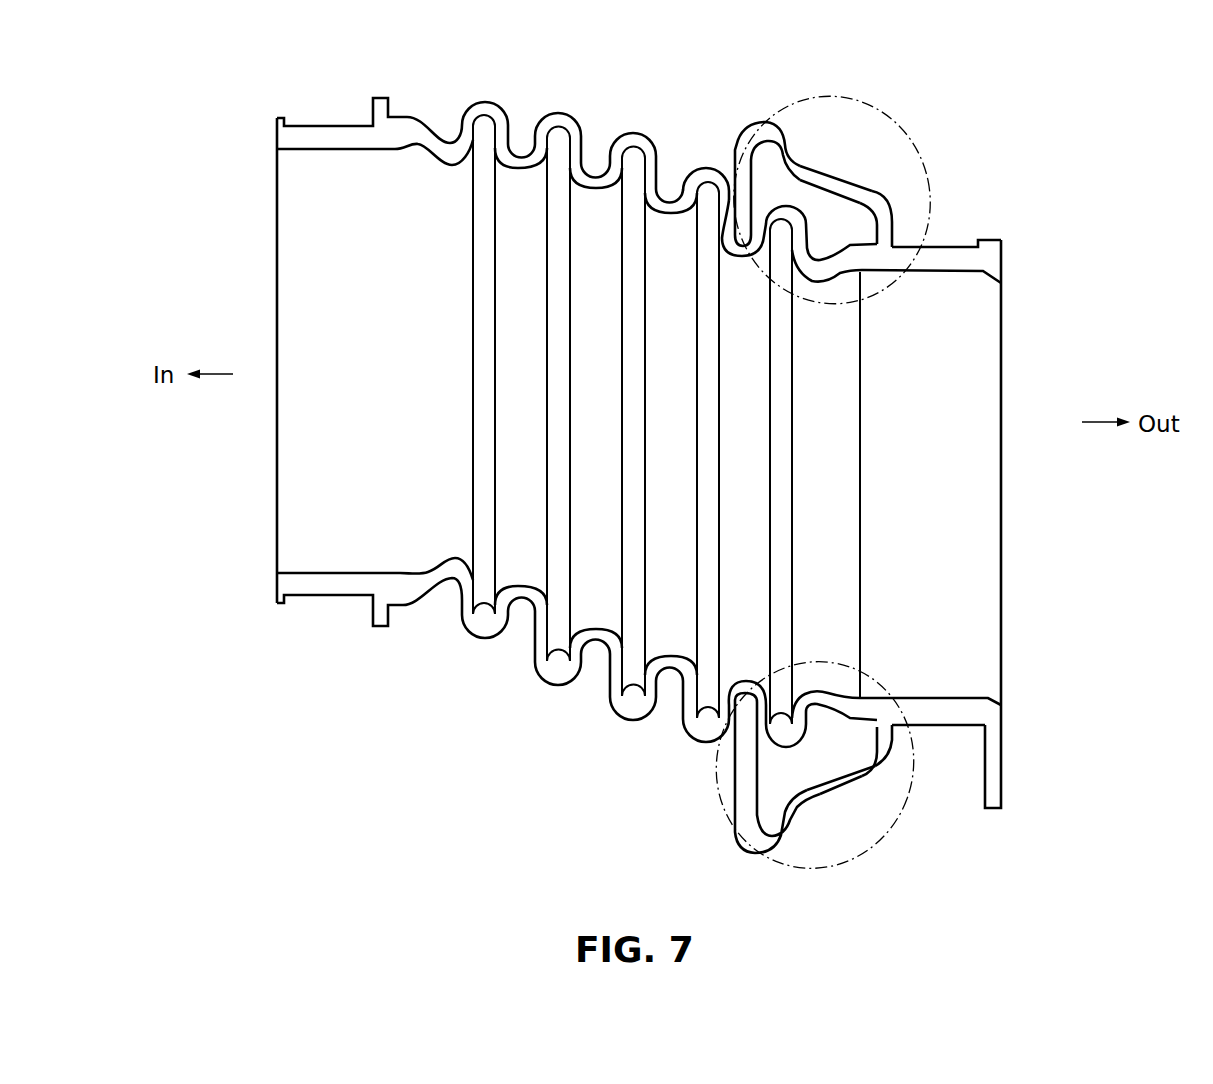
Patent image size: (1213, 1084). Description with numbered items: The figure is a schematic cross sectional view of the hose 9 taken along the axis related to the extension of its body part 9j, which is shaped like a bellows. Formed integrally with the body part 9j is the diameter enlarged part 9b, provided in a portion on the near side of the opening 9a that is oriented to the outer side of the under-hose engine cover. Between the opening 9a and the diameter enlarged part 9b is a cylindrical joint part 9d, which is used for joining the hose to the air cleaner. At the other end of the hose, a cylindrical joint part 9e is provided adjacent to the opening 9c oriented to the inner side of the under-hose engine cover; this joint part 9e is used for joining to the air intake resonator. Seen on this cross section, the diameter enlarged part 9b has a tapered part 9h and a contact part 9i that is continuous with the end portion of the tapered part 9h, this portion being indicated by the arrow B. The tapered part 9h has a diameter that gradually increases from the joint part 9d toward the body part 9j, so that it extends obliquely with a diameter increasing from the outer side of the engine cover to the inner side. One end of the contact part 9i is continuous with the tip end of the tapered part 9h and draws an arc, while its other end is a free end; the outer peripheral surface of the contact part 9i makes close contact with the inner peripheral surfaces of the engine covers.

The hose 9 is at (562, 113).
The opening 9a is at (1007, 313).
The diameter enlarged part 9b is at (813, 163).
The opening 9c is at (268, 230).
The joint part 9d is at (952, 243).
The joint part 9e is at (322, 125).
The tapered part 9h is at (860, 177).
The contact part 9i is at (770, 115).
The body part 9j is at (607, 710).
The arrow B is at (907, 297).